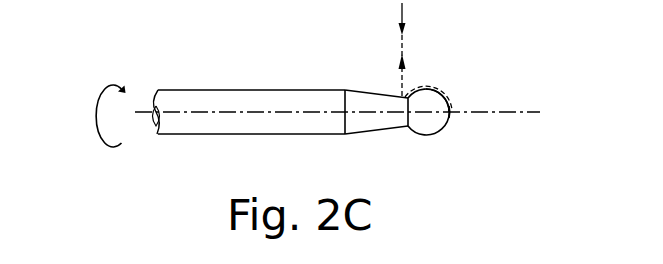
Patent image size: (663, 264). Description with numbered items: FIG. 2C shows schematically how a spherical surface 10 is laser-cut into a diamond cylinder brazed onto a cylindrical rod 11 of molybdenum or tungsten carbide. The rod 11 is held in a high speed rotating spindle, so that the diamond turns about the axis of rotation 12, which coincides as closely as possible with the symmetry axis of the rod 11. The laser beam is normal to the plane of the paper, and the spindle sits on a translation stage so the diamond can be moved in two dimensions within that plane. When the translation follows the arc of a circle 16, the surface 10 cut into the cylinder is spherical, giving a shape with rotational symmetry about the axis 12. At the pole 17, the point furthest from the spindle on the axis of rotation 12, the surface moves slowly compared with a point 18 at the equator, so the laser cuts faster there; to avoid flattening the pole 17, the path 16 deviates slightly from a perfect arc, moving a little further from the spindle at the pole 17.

The spherical surface 10 is at (446, 128).
The cylindrical rod 11 is at (272, 90).
The axis of rotation 12 is at (503, 116).
The arc of a circle 16 is at (448, 106).
The pole 17 is at (450, 111).
The point on the equator 18 is at (426, 87).